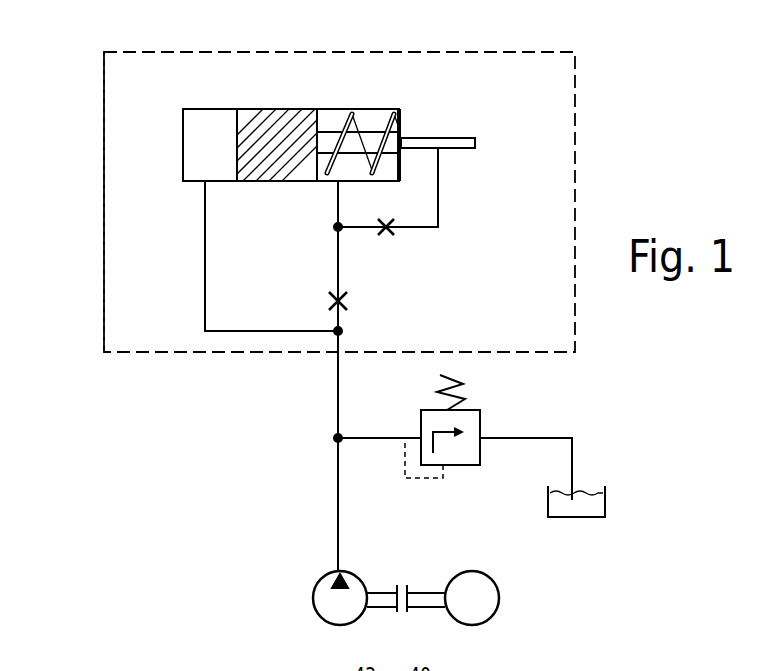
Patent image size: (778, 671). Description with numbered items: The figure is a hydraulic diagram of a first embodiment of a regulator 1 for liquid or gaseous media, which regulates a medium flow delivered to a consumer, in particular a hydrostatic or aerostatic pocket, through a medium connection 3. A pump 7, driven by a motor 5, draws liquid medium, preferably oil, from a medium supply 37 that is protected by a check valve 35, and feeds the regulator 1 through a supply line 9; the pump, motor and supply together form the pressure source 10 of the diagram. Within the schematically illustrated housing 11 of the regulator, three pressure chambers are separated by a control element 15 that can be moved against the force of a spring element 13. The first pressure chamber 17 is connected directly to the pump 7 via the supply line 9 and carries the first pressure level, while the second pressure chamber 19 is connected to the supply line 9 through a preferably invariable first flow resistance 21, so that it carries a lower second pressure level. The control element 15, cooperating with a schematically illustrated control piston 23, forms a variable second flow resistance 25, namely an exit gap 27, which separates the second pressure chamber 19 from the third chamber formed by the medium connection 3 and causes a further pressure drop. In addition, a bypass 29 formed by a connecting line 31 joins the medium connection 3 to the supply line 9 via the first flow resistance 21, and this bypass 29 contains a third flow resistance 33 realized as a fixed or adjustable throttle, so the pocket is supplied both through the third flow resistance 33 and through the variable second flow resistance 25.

The regulator 1 is at (163, 46).
The medium connection 3 is at (452, 135).
The motor 5 is at (485, 612).
The pump 7 is at (340, 625).
The supply line 9 is at (337, 400).
The pressure source 10 is at (198, 670).
The housing 11 is at (125, 88).
The spring element 13 is at (340, 122).
The control element 15 is at (273, 125).
The first pressure chamber 17 is at (207, 160).
The second pressure chamber 19 is at (377, 120).
The first flow resistance 21 is at (350, 302).
The control piston 23 is at (380, 133).
The variable second flow resistance 25 is at (405, 130).
The exit gap 27 is at (397, 182).
The bypass 29 is at (454, 219).
The connecting line 31 is at (438, 170).
The third flow resistance 33 is at (388, 236).
The check valve 35 is at (470, 405).
The medium supply 37 is at (585, 486).